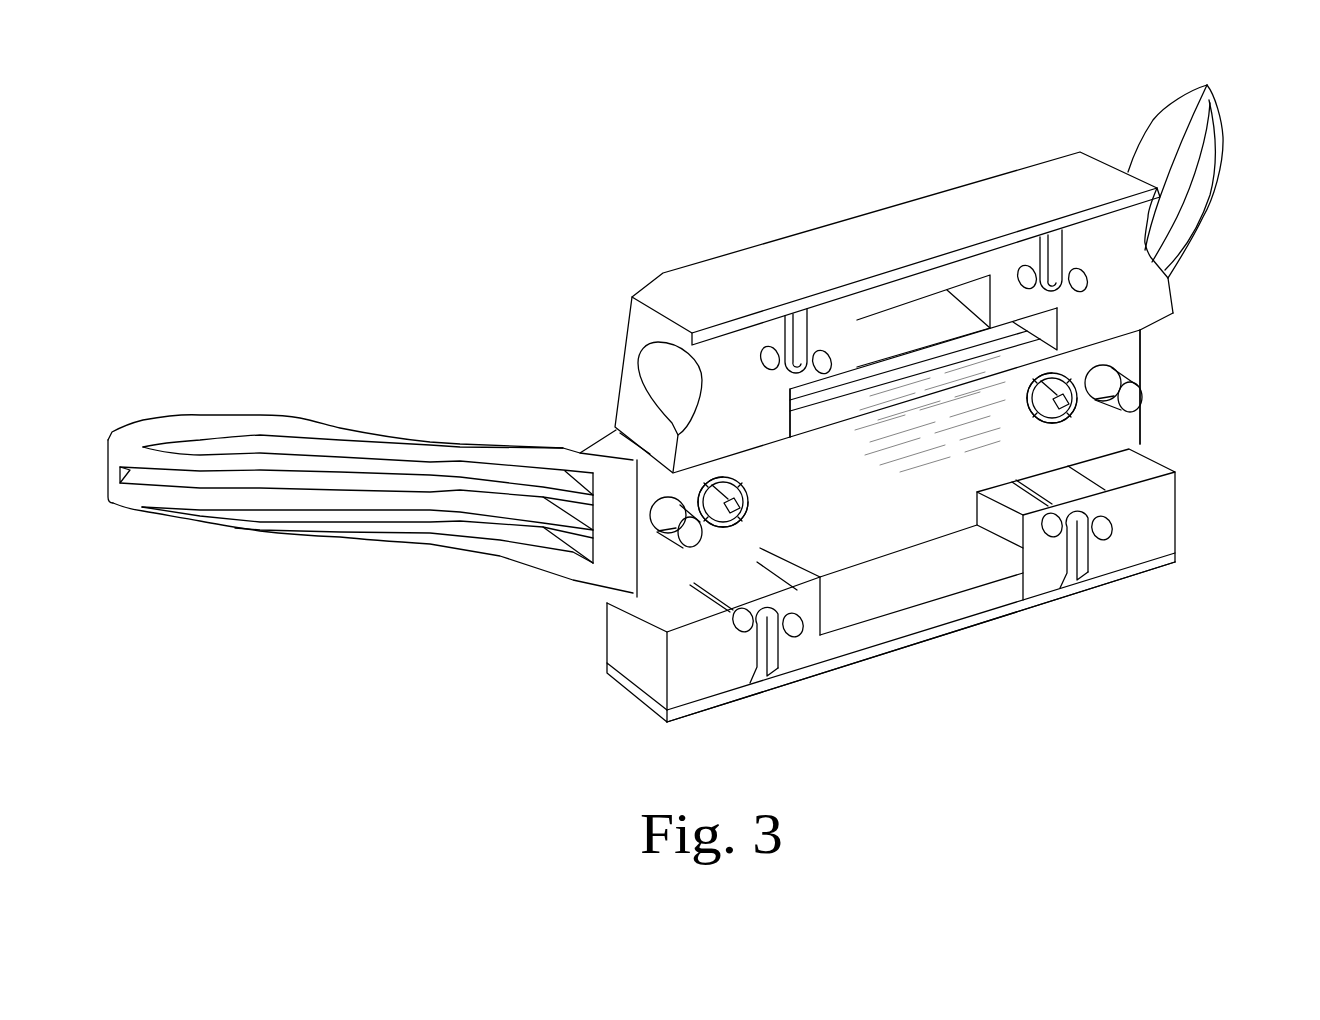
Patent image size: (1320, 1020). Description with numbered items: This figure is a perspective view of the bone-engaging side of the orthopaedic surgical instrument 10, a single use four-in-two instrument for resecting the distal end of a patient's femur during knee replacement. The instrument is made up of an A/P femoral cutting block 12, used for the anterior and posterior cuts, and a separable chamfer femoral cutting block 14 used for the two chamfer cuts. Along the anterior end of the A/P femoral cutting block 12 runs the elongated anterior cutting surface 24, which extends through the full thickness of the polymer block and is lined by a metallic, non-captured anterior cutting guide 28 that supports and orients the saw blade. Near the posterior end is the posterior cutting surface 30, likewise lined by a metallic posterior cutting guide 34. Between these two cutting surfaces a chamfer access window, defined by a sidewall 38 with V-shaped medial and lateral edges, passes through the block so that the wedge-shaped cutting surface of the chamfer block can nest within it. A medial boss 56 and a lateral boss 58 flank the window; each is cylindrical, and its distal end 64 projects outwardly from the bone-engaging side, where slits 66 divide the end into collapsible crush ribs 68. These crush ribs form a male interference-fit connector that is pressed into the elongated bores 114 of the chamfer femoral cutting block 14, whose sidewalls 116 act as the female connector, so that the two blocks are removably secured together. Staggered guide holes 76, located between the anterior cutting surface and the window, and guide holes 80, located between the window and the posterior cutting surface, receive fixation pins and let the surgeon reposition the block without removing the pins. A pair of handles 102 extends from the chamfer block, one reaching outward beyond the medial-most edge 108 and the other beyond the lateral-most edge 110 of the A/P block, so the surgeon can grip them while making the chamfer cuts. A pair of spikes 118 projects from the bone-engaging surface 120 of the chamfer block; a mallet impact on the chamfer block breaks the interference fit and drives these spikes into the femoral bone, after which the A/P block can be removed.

The orthopaedic surgical instrument 10 is at (484, 162).
The A/P femoral cutting block 12 is at (1167, 538).
The chamfer femoral cutting block 14 is at (187, 513).
The anterior cutting surface 24 is at (733, 327).
The anterior cutting guide 28 is at (836, 232).
The posterior cutting surface 30 is at (853, 657).
The posterior cutting guide 34 is at (920, 638).
The sidewall 38 is at (790, 432).
The medial boss 56 is at (1037, 417).
The lateral boss 58 is at (742, 497).
The distal end 64 is at (716, 543).
The slits 66 is at (742, 482).
The crush ribs 68 is at (742, 507).
The guide holes 76 is at (765, 380).
The guide holes 80 is at (788, 640).
The handles 102 is at (134, 440).
The medial-most edge 108 is at (1177, 518).
The lateral-most edge 110 is at (647, 680).
The elongated bores 114 is at (702, 498).
The sidewalls 116 is at (738, 527).
The spikes 118 is at (610, 594).
The bone-engaging surface 120 is at (1132, 423).